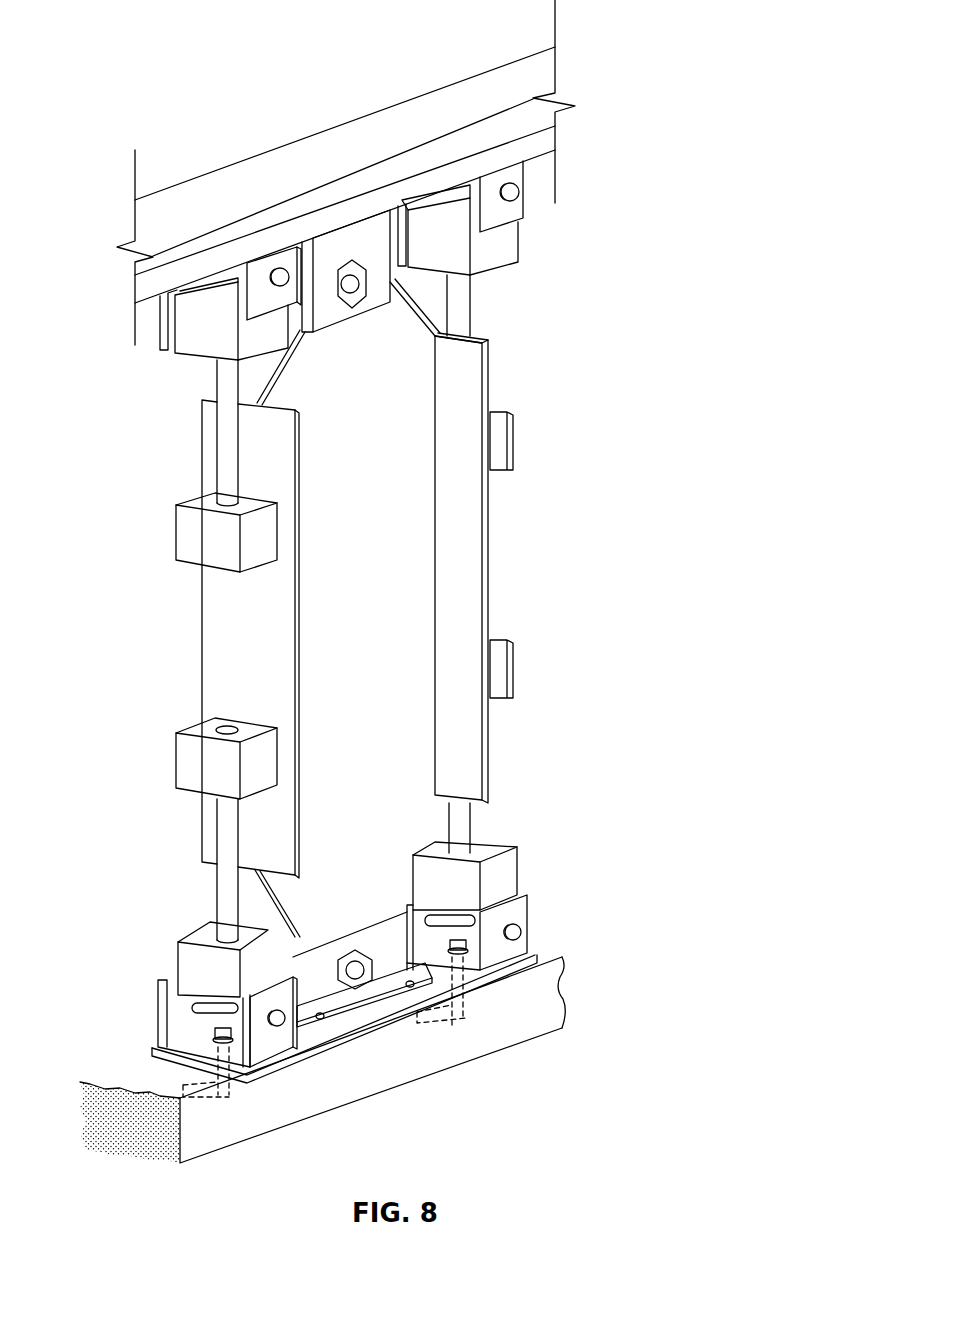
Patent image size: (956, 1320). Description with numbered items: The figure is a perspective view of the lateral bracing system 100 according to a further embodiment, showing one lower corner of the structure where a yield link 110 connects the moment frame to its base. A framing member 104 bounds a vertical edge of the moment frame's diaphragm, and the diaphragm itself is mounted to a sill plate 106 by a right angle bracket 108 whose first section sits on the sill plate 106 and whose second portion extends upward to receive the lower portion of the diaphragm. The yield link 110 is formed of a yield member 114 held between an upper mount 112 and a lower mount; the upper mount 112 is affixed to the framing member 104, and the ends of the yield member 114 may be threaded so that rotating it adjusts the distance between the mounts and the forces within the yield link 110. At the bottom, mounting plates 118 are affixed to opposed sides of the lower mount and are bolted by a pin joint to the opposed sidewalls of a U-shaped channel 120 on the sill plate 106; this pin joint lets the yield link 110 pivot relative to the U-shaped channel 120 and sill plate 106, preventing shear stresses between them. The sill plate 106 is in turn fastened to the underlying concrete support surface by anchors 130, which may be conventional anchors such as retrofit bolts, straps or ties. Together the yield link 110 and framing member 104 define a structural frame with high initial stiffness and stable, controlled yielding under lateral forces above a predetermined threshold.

The lateral bracing system 100 is at (143, 114).
The framing member 104 is at (494, 522).
The sill plate 106 is at (560, 992).
The right angle bracket 108 is at (335, 1005).
The yield link 110 is at (160, 664).
The upper mount 112 is at (500, 682).
The yield member 114 is at (476, 812).
The mounting plate 118 is at (520, 866).
The U-shaped channel 120 is at (521, 914).
The anchor 130 is at (480, 1018).